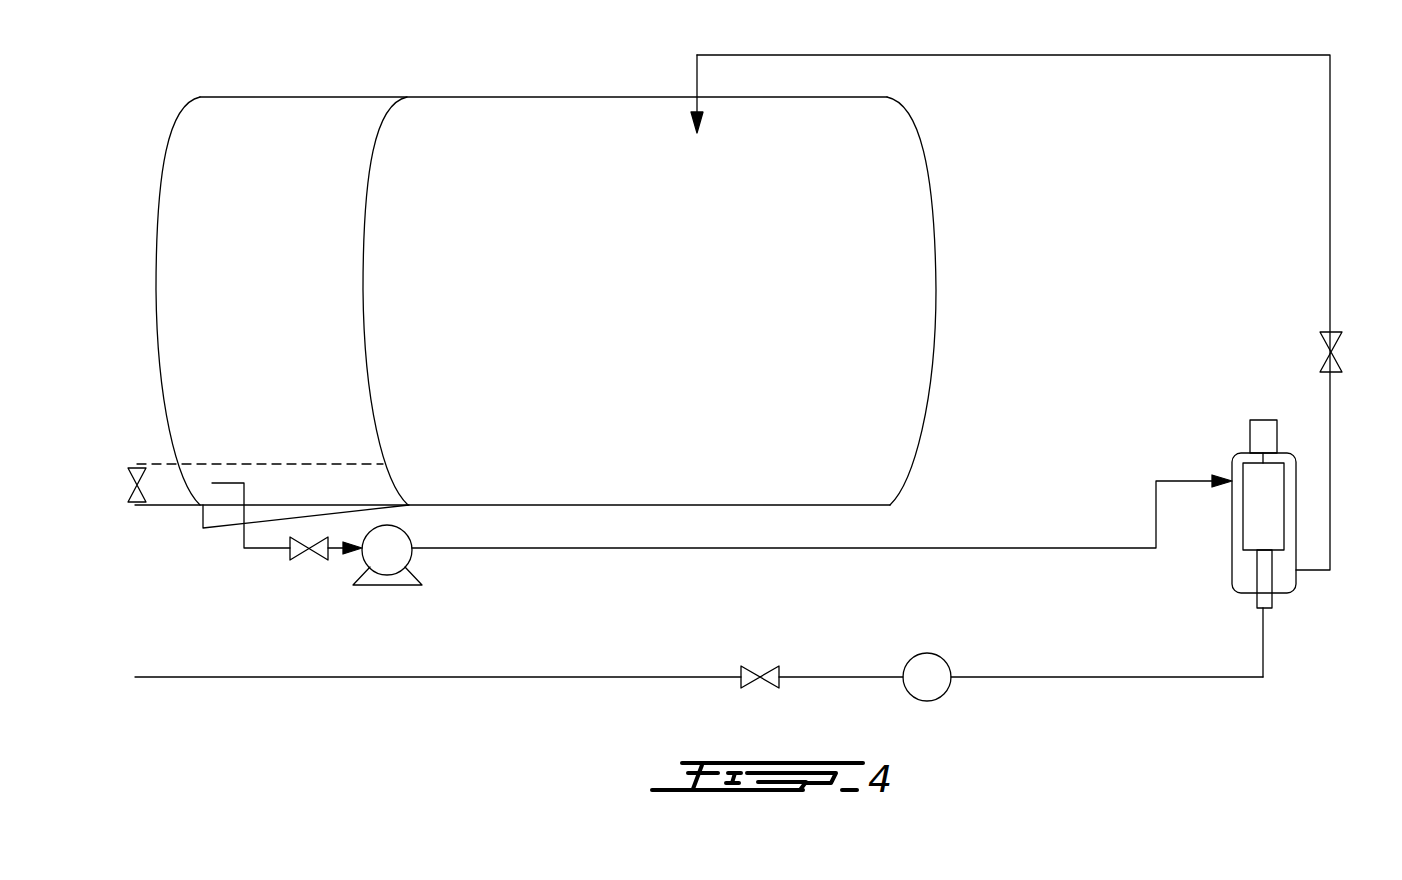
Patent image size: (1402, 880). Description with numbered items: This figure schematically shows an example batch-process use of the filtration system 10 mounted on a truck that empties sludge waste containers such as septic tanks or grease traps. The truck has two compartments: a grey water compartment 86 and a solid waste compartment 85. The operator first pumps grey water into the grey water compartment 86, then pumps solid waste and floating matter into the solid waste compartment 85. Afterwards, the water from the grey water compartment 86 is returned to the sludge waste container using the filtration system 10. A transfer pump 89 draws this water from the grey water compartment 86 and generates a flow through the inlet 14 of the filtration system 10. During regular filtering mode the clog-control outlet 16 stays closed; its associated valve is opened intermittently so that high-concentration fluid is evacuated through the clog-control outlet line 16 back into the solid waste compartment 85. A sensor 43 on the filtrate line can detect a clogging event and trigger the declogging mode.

The filtration system 10 is at (1312, 500).
The inlet 14 is at (1192, 481).
The clog-control outlet 16 is at (1330, 220).
The sensor 43 is at (930, 672).
The solid waste compartment 85 is at (517, 128).
The grey water compartment 86 is at (300, 128).
The transfer pump 89 is at (395, 553).